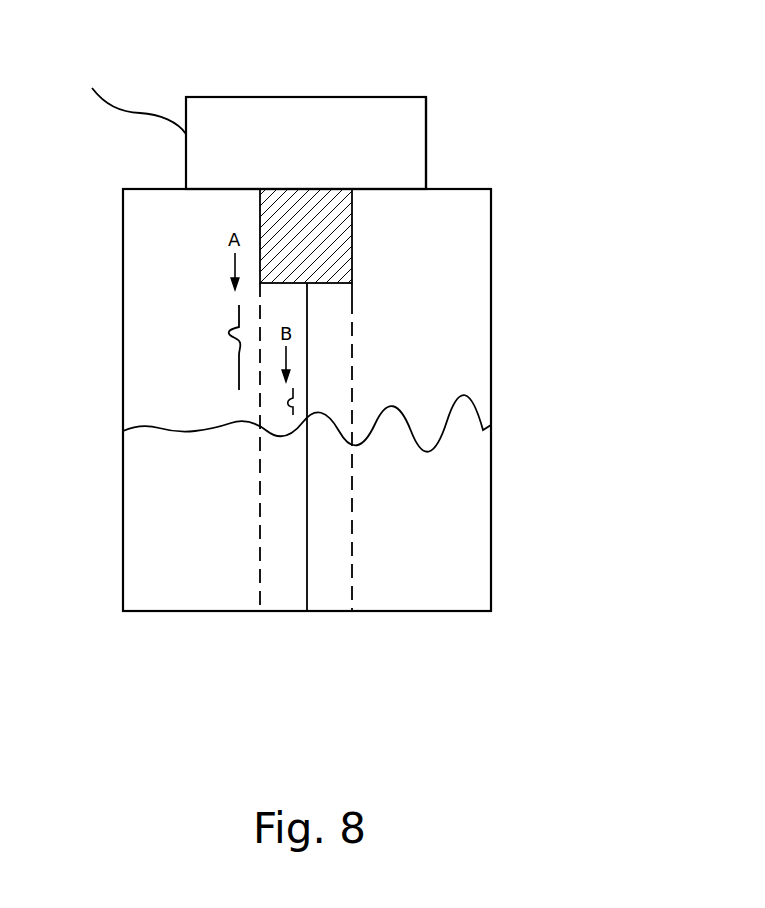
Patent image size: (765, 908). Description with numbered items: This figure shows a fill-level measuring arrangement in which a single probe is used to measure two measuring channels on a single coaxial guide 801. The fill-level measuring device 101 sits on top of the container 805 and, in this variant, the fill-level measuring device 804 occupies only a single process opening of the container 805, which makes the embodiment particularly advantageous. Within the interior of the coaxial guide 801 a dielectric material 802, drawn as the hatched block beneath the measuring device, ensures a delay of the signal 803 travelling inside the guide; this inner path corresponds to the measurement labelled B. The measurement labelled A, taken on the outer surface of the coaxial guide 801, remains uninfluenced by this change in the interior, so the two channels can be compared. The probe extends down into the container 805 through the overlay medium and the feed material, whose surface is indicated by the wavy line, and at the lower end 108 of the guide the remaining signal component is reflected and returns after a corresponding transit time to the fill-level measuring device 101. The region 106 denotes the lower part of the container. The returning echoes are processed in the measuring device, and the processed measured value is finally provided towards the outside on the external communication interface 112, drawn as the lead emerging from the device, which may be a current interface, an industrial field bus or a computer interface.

The fill-level measuring device 101 is at (343, 97).
The external communication interface 112 is at (128, 108).
The fill-level measuring device 804 is at (427, 128).
The dielectric material 802 is at (330, 262).
The coaxial guide 801 is at (353, 343).
The signal 803 is at (292, 408).
The container 805 is at (492, 515).
The first region 106 is at (197, 592).
The lower end 108 is at (412, 611).